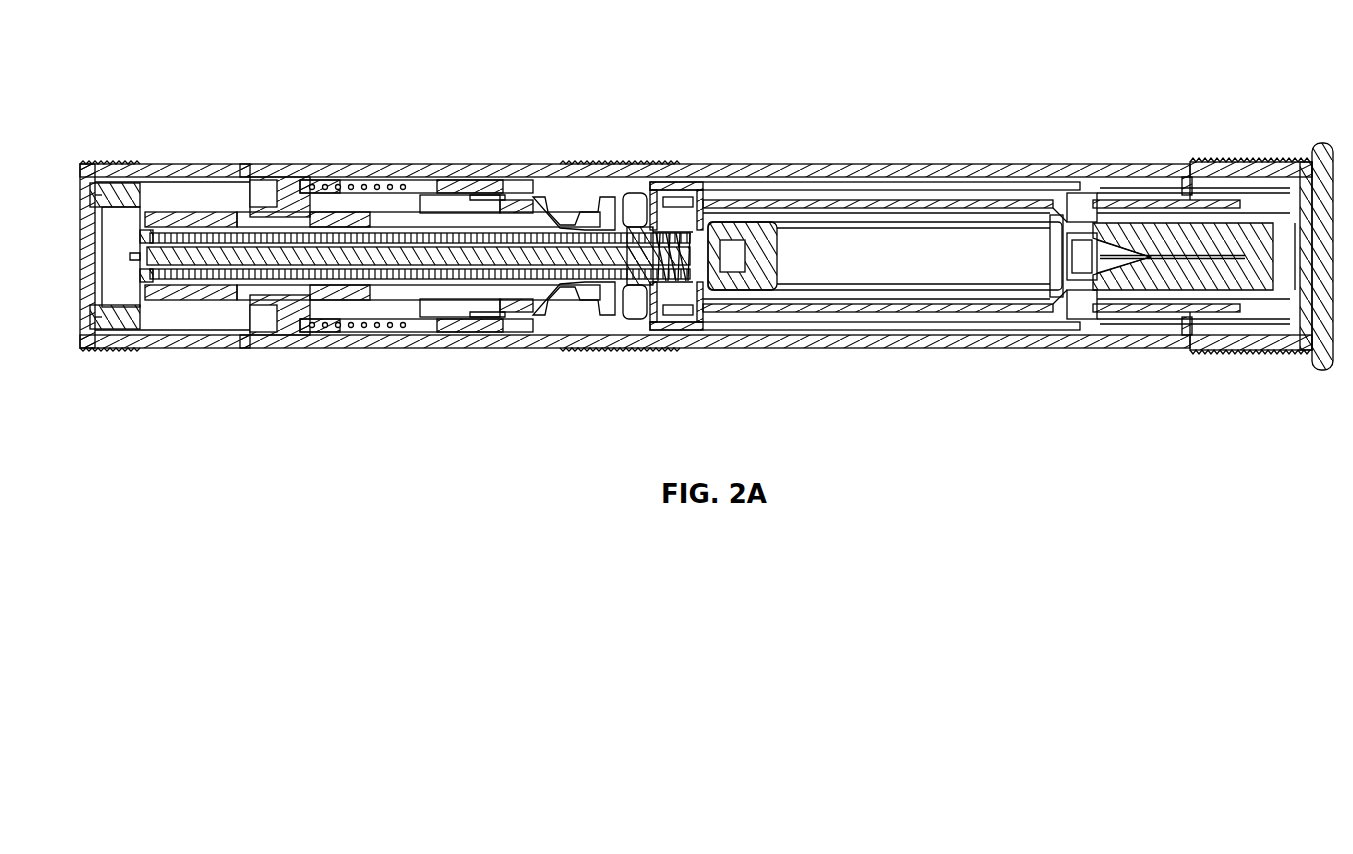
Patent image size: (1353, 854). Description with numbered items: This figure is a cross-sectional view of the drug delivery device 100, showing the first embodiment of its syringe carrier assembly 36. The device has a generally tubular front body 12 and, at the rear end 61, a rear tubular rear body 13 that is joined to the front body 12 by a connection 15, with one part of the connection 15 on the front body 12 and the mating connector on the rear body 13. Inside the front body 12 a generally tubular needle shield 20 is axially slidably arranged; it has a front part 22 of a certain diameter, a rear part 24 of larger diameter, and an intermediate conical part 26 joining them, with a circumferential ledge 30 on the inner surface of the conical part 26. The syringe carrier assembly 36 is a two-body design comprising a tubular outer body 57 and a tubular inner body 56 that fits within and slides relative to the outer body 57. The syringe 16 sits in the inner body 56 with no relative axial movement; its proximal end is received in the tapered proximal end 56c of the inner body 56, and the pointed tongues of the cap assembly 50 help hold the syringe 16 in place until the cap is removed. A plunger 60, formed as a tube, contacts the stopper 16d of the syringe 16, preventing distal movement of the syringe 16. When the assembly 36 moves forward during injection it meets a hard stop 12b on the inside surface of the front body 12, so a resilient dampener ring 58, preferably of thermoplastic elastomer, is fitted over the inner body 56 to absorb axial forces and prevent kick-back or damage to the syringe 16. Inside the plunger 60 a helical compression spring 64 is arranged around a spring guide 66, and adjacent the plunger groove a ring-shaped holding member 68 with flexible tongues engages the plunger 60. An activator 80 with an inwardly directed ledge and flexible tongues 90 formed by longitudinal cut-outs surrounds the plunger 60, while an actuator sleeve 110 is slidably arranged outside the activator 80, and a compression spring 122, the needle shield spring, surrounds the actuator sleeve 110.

The drug delivery device 100 is at (638, 92).
The front body 12 is at (913, 170).
The hard stop 12b is at (1206, 185).
The rear body 13 is at (263, 172).
The connection 15 is at (413, 172).
The syringe 16 is at (838, 235).
The stopper 16d is at (738, 258).
The needle shield 20 is at (722, 173).
The front part 22 is at (1227, 313).
The rear part 24 is at (817, 337).
The conical part 26 is at (1140, 317).
The circumferential ledge 30 is at (1158, 195).
The syringe carrier assembly 36 is at (903, 310).
The cap assembly 50 is at (1267, 157).
The inner body 56 is at (1003, 209).
The proximal end of inner body 56c is at (1075, 308).
The outer body 57 is at (653, 340).
The dampener ring 58 is at (680, 318).
The plunger 60 is at (385, 345).
The rear end 61 is at (96, 390).
The compression spring 64 is at (180, 215).
The spring guide 66 is at (165, 290).
The holding member 68 is at (568, 315).
The activator 80 is at (475, 318).
The flexible tongues 90 is at (540, 200).
The actuator sleeve 110 is at (483, 176).
The needle shield spring 122 is at (345, 190).